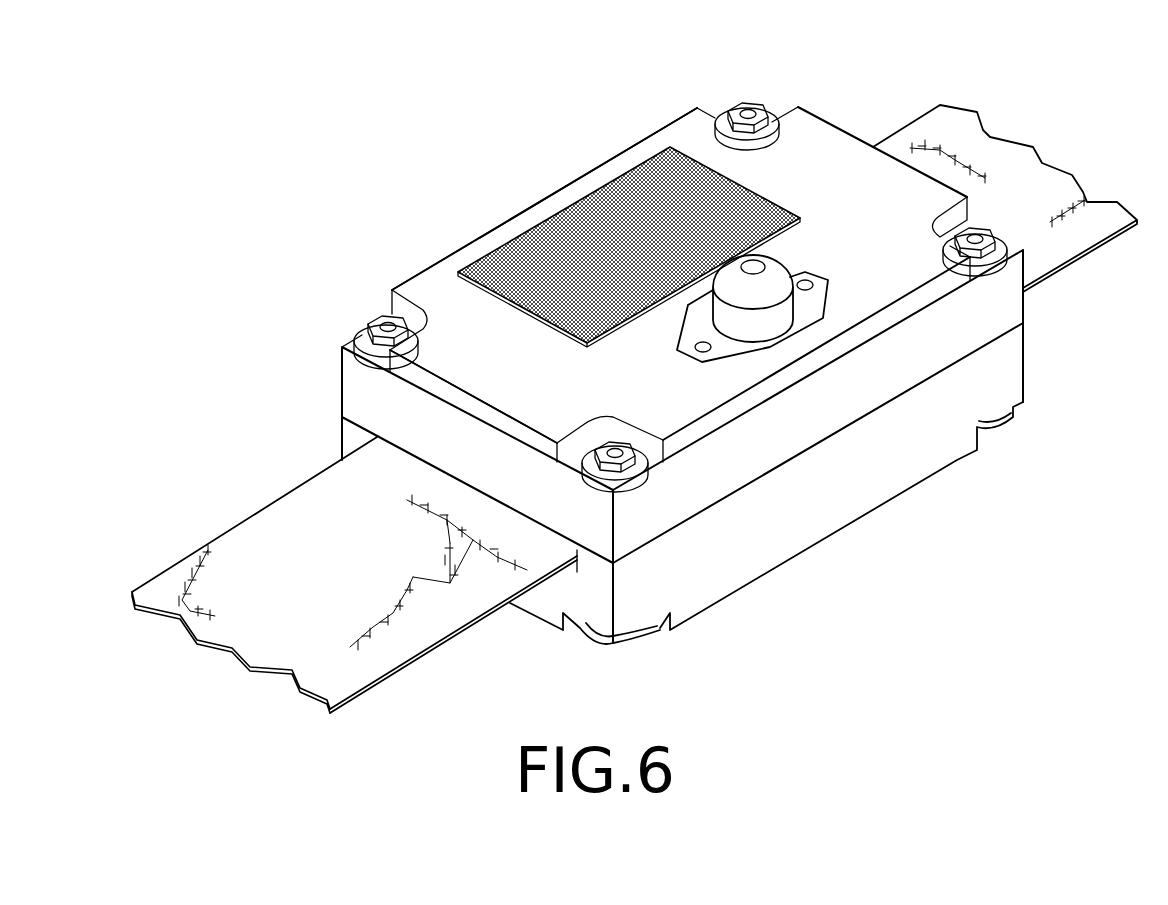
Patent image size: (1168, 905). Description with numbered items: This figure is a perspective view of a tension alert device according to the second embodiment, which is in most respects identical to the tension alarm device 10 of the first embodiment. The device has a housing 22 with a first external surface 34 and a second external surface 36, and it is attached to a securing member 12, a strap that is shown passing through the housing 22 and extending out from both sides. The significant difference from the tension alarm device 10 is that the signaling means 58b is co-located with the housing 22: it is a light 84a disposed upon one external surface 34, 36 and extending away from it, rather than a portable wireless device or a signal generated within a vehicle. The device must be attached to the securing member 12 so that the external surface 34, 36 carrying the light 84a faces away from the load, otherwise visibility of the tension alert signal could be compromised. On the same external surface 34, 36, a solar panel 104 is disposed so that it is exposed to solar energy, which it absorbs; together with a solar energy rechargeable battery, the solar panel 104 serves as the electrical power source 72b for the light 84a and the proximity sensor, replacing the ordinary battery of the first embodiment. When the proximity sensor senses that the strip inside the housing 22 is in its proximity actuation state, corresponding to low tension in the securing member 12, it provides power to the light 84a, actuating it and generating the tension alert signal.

The tension alarm device 10 is at (305, 138).
The securing member 12 is at (282, 510).
The housing 22 is at (803, 125).
The first external surface 34 is at (472, 219).
The second external surface 36 is at (919, 504).
The signaling means 58b is at (836, 309).
The electrical power source 72b is at (545, 189).
The light 84a is at (780, 262).
The solar panel 104 is at (652, 165).